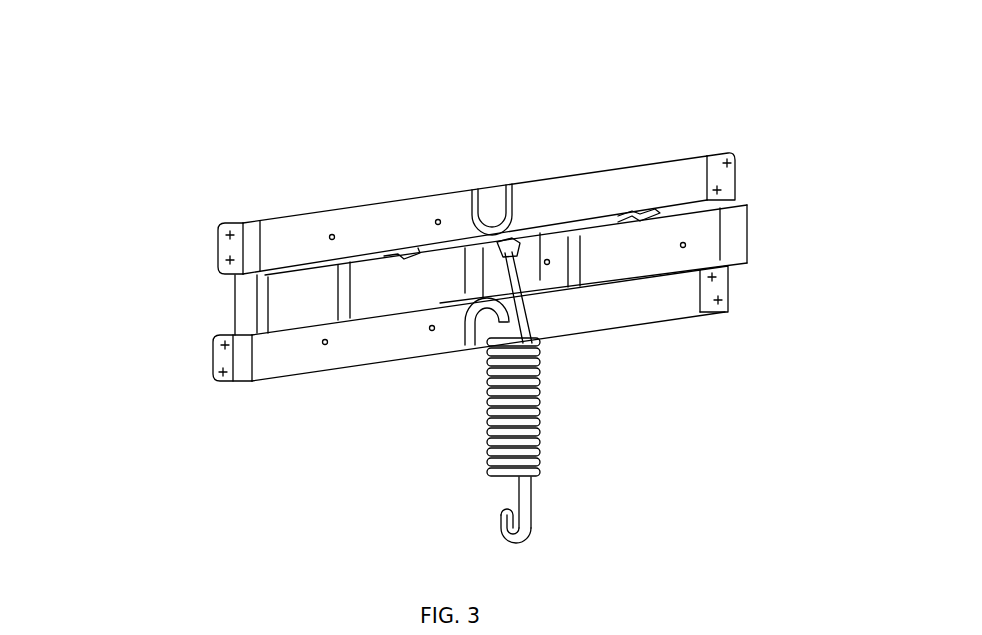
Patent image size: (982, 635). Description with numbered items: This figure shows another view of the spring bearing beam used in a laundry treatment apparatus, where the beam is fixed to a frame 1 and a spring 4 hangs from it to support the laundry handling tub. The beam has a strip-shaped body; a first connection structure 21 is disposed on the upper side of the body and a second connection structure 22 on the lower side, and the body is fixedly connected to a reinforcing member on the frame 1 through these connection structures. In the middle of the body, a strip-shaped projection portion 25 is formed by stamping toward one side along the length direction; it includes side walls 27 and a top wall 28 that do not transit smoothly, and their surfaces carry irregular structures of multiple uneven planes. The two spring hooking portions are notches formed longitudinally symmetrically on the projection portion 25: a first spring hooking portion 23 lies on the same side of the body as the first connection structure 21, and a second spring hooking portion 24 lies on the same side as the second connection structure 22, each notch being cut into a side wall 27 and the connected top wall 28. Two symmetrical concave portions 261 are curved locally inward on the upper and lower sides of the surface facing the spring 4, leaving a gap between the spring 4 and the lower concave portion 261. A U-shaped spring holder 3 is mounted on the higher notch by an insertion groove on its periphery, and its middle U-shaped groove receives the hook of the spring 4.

The frame 1 is at (293, 238).
The spring holder 3 is at (509, 263).
The spring 4 is at (485, 408).
The first connection structure 21 is at (230, 232).
The second connection structure 22 is at (727, 297).
The first spring hooking portion 23 is at (522, 237).
The second spring hooking portion 24 is at (518, 308).
The projection portion 25 is at (620, 265).
The side wall 27 is at (350, 257).
The top wall 28 is at (400, 288).
The concave portion 261 is at (492, 203).